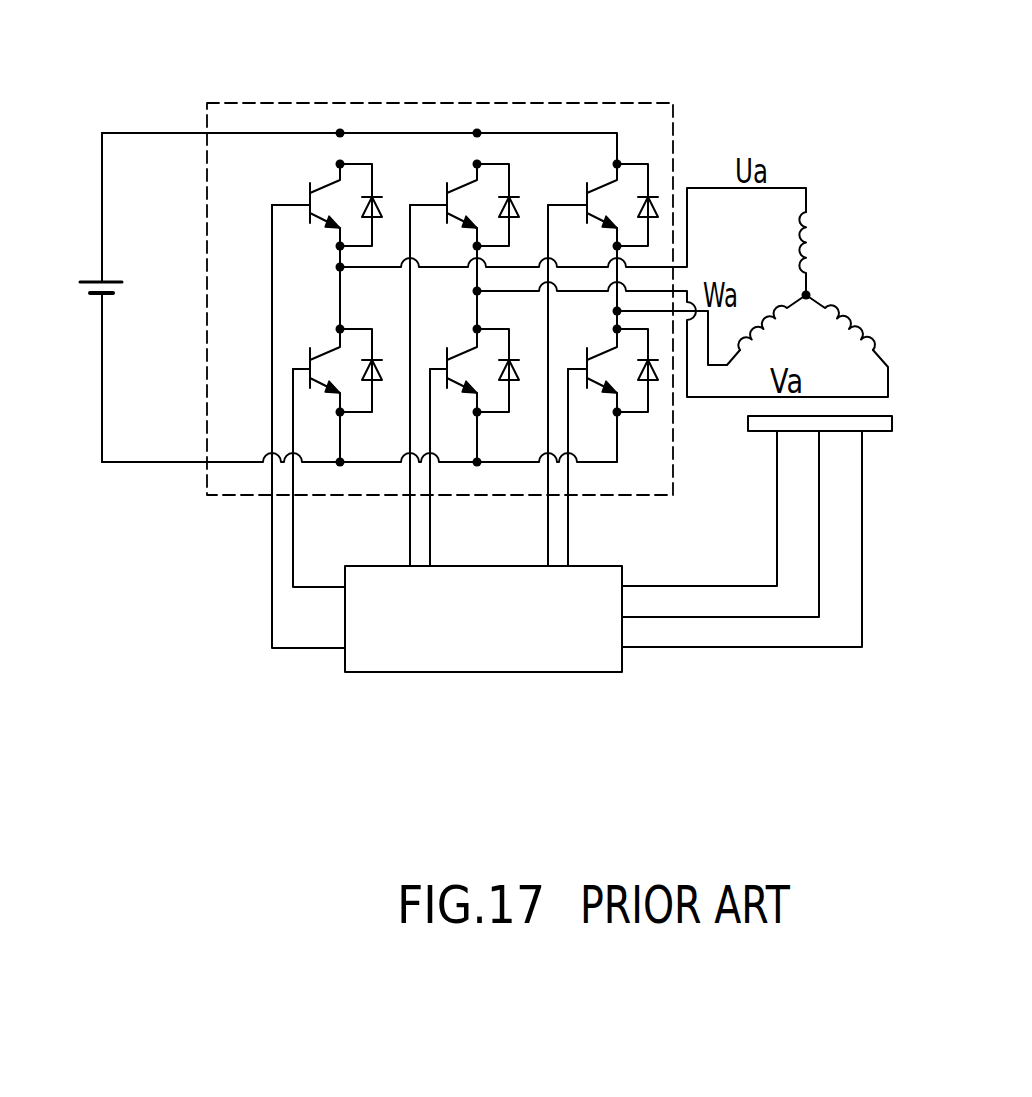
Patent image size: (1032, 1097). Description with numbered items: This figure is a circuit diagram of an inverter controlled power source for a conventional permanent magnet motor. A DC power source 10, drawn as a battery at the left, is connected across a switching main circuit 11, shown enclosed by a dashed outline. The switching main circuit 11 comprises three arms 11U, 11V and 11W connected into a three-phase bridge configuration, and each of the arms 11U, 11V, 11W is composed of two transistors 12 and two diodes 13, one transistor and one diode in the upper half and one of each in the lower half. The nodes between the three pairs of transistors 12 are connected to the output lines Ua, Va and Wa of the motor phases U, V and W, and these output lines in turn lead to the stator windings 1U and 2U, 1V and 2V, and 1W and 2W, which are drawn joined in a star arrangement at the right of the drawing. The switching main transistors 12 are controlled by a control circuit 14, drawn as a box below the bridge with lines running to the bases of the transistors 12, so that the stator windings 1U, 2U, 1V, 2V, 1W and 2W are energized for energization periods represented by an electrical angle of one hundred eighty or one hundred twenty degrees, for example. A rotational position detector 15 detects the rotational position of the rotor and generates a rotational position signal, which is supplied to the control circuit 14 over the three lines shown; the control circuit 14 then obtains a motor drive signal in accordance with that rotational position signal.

The DC power source 10 is at (85, 292).
The switching main circuit 11 is at (598, 103).
The arm 11U is at (337, 273).
The arm 11V is at (472, 295).
The arm 11W is at (613, 313).
The transistor 12 is at (302, 192).
The diode 13 is at (375, 192).
The control circuit 14 is at (457, 672).
The rotational position detector 15 is at (892, 425).
The stator winding 1U is at (850, 223).
The stator winding 2U is at (820, 236).
The stator winding 1V is at (866, 308).
The stator winding 2V is at (880, 302).
The stator winding 1W is at (754, 286).
The stator winding 2W is at (760, 317).